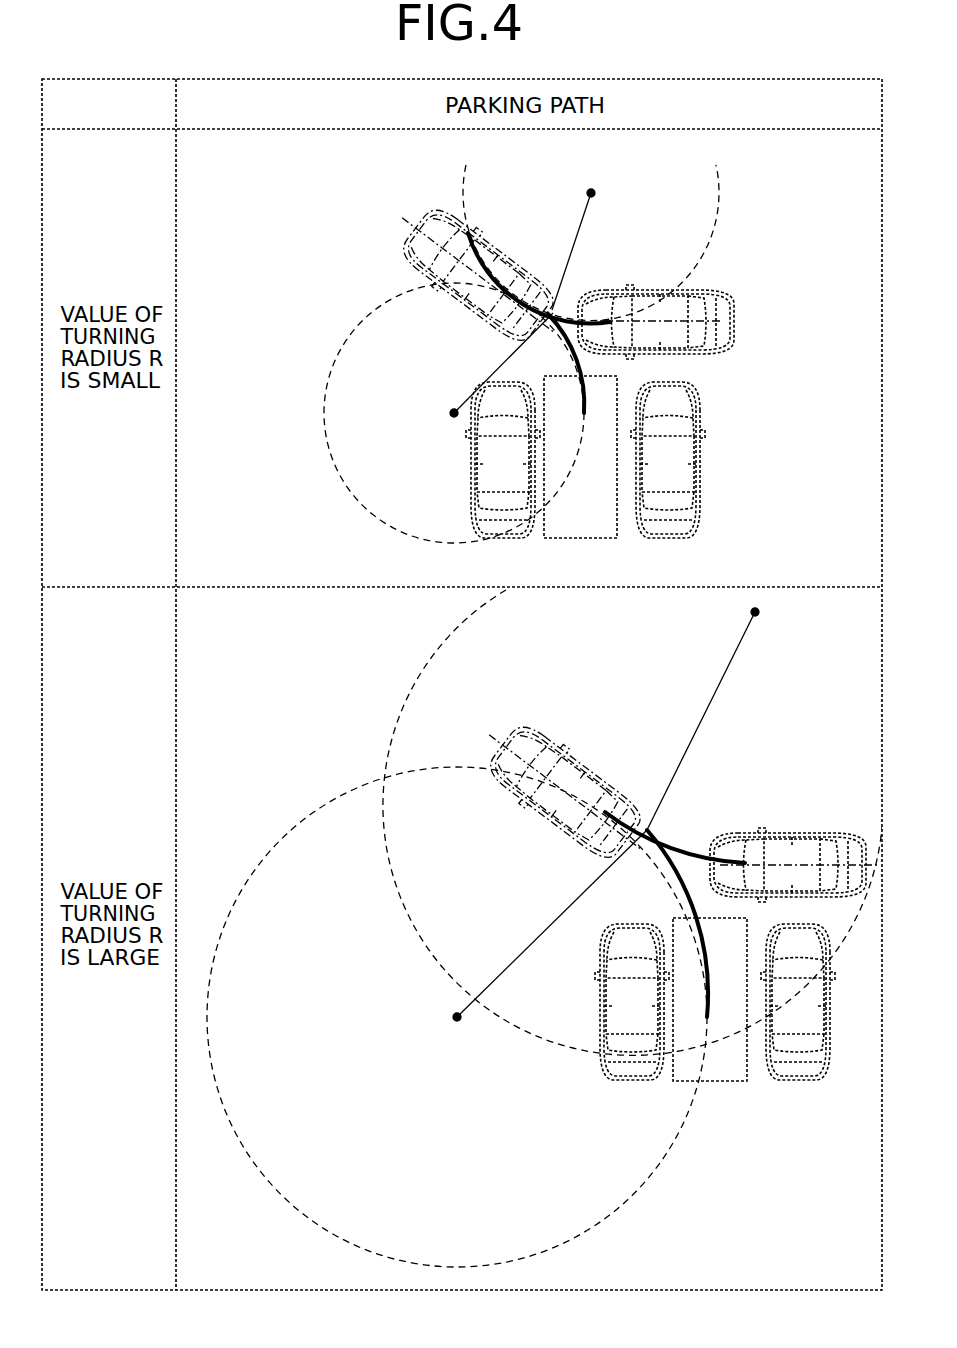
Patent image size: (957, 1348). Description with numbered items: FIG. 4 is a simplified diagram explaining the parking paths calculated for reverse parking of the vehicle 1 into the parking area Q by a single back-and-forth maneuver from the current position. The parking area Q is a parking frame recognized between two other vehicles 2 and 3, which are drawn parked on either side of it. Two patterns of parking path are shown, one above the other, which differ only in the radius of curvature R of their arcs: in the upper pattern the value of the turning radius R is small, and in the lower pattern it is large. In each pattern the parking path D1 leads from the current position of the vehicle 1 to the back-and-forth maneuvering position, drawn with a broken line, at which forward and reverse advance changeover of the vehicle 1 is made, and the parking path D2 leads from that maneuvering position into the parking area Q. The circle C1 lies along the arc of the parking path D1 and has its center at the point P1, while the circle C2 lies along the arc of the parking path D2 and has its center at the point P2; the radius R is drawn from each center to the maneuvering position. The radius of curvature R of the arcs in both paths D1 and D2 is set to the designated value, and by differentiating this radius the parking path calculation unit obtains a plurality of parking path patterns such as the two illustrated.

The vehicle 1 is at (483, 250).
The other vehicle 2 is at (503, 539).
The other vehicle 3 is at (668, 539).
The parking area Q is at (581, 539).
The center of circle C1 P1 is at (594, 197).
The center of circle C2 P2 is at (452, 410).
The circle C1 is at (462, 192).
The circle C2 is at (338, 352).
The parking path D1 is at (565, 308).
The parking path D2 is at (562, 345).
The radius of curvature R is at (604, 605).